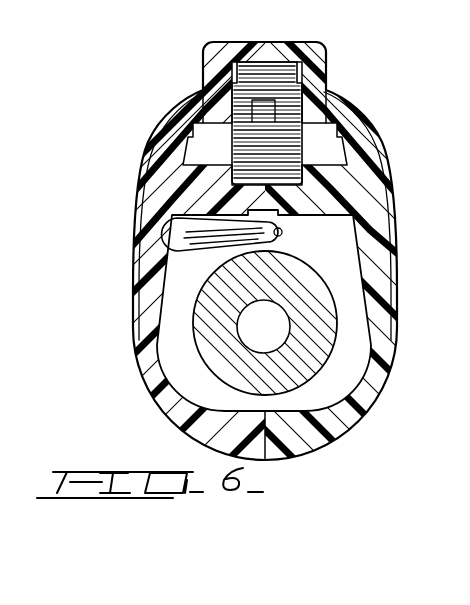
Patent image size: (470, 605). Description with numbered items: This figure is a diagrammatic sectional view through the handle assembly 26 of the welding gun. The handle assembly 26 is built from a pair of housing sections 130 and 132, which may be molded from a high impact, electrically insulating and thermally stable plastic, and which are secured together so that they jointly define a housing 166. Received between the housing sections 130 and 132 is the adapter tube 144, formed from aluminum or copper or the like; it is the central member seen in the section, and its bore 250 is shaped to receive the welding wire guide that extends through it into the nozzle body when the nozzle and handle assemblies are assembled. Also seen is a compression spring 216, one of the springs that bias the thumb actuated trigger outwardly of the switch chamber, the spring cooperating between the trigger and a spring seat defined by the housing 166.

The handle assembly 26 is at (400, 185).
The housing section 130 is at (357, 140).
The housing section 132 is at (168, 138).
The adapter tube 144 is at (330, 303).
The housing 166 is at (377, 163).
The compression spring 216 is at (278, 125).
The bore 250 is at (280, 306).